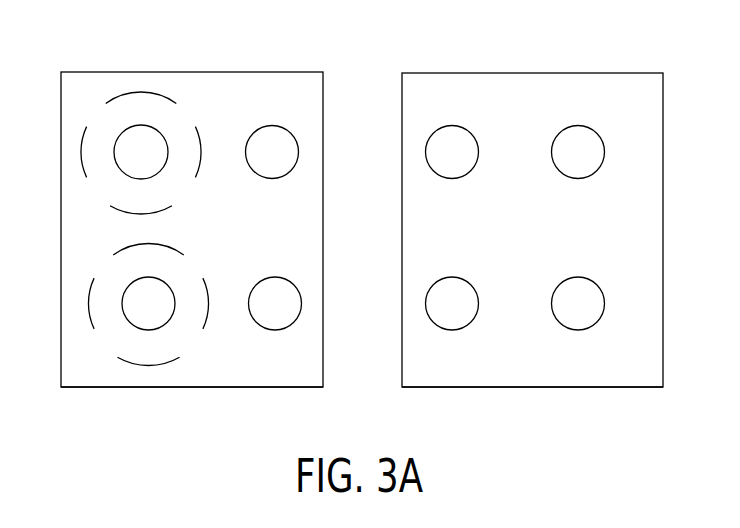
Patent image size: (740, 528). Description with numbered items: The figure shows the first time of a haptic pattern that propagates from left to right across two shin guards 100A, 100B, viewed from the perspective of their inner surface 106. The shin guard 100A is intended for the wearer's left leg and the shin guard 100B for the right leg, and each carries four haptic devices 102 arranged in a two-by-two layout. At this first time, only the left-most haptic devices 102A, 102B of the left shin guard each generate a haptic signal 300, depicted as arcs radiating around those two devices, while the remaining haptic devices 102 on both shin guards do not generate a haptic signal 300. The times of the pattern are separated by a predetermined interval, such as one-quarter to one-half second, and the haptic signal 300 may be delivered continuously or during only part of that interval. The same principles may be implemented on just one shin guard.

The shin guard 100A is at (187, 72).
The shin guard 100B is at (533, 73).
The haptic devices 102 is at (298, 158).
The left-most haptic device 102A is at (165, 162).
The left-most haptic device 102B is at (172, 313).
The inner surface 106 is at (288, 370).
The haptic signal 300 is at (83, 153).